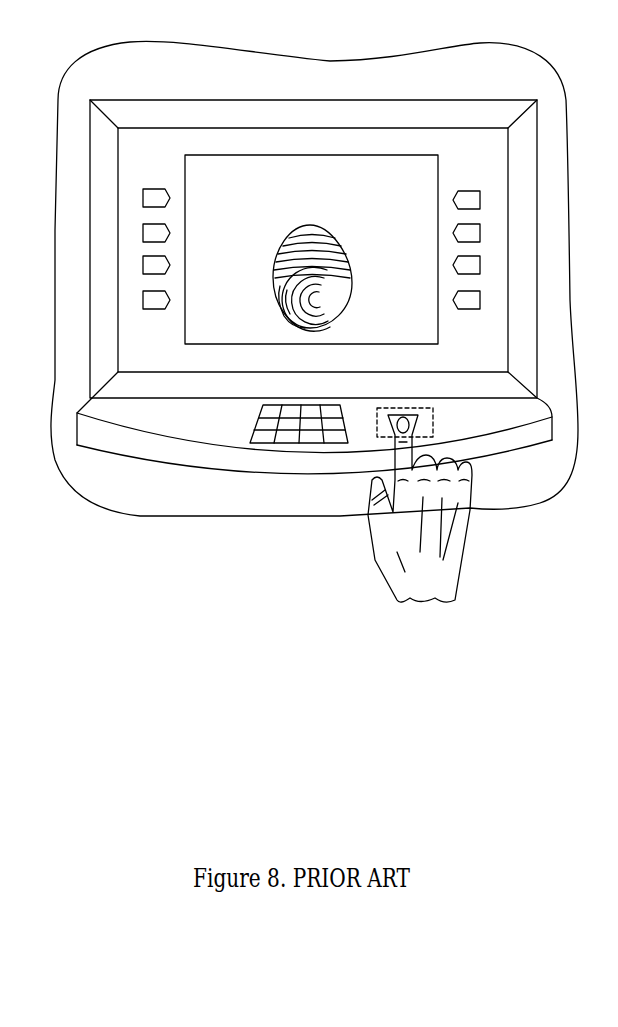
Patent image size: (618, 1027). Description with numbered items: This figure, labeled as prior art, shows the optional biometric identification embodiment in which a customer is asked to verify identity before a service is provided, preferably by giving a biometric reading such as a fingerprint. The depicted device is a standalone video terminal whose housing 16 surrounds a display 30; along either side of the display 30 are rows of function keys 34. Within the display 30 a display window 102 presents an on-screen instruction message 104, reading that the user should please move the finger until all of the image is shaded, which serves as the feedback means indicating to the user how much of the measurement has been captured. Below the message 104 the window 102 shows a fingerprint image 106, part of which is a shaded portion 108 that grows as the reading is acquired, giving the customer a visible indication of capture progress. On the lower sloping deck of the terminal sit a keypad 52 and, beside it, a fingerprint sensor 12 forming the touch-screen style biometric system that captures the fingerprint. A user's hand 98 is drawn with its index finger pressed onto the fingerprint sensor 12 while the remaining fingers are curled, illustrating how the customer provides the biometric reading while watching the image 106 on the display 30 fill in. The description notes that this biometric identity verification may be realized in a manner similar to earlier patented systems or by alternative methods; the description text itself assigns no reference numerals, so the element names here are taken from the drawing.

The housing 16 is at (133, 56).
The display screen 30 is at (195, 327).
The display window 102 is at (262, 311).
The instruction message 104 is at (376, 166).
The fingerprint image 106 is at (342, 262).
The shaded portion of fingerprint image 108 is at (280, 287).
The function keys 34 is at (155, 189).
The keypad 52 is at (262, 430).
The fingerprint sensor 12 is at (435, 415).
The user's hand 98 is at (438, 597).